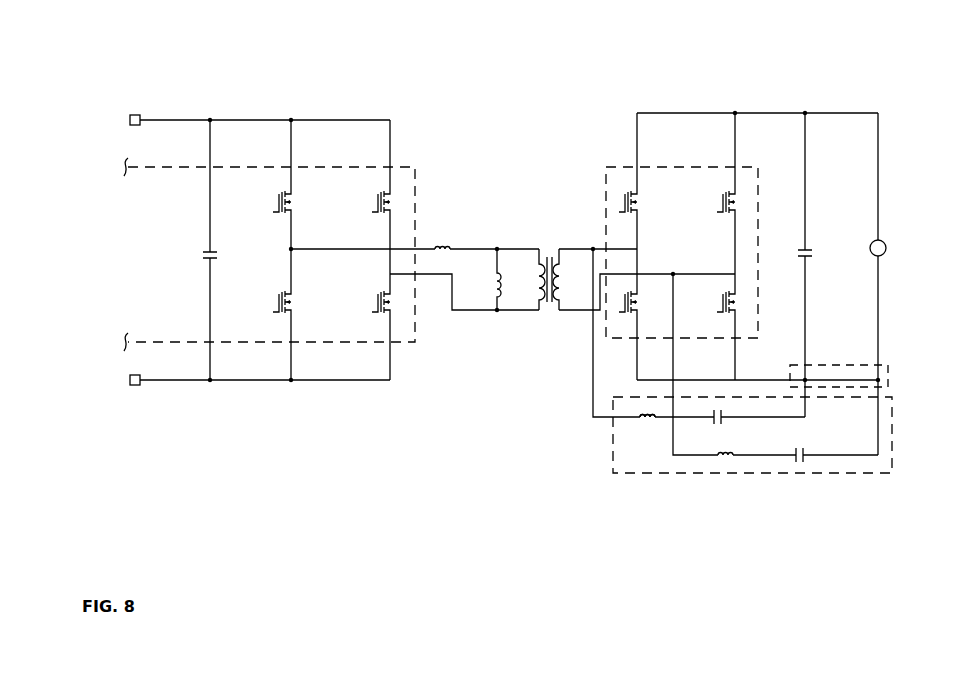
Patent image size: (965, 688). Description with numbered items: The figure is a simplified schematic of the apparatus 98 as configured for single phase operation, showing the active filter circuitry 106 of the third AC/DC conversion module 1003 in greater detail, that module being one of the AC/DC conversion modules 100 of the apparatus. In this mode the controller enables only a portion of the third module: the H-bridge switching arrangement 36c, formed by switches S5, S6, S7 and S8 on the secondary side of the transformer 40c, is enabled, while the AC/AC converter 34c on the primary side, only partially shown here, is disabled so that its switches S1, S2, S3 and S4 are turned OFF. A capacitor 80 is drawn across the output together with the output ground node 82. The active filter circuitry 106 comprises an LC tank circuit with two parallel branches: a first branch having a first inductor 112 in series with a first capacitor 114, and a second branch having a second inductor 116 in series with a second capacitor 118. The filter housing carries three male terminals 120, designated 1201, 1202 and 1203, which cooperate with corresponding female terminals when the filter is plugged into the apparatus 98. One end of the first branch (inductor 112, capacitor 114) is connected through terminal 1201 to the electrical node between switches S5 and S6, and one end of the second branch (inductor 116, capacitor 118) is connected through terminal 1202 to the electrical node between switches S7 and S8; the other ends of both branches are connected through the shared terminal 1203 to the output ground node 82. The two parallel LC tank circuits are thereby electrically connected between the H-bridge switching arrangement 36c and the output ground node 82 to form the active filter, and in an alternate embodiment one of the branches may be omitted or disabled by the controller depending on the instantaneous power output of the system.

The apparatus 98 is at (505, 99).
The AC/DC conversion module 100 is at (260, 299).
The third AC/DC conversion module 1003 is at (260, 299).
The AC/AC converter 34c is at (412, 167).
The H-bridge switching arrangement 36c is at (719, 242).
The transformer 40c is at (547, 227).
The output capacitor 80 is at (806, 113).
The output ground node 82 is at (806, 380).
The active filter circuitry 106 is at (732, 390).
The first inductor 112 is at (652, 420).
The first capacitor 114 is at (724, 417).
The second inductor 116 is at (732, 455).
The second capacitor 118 is at (802, 452).
The male terminal 120 is at (732, 352).
The first male terminal 1201 is at (613, 417).
The second male terminal 1202 is at (677, 397).
The third male terminal 1203 is at (890, 378).
The switch S1 is at (282, 208).
The switch S2 is at (381, 208).
The switch S3 is at (282, 307).
The switch S4 is at (381, 307).
The switch S5 is at (628, 208).
The switch S6 is at (628, 308).
The switch S7 is at (727, 208).
The switch S8 is at (727, 307).